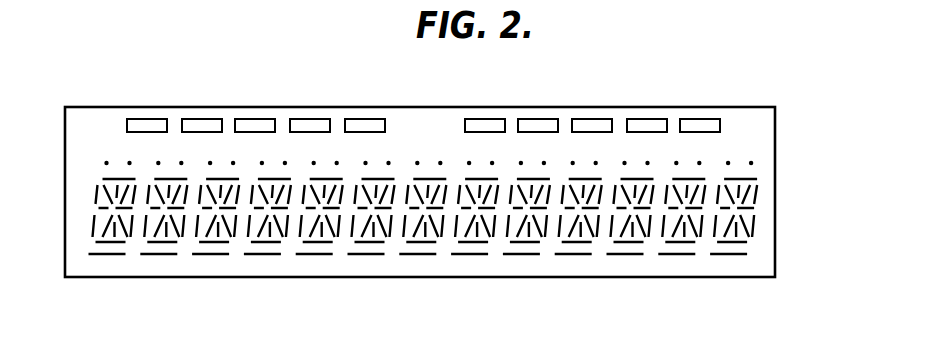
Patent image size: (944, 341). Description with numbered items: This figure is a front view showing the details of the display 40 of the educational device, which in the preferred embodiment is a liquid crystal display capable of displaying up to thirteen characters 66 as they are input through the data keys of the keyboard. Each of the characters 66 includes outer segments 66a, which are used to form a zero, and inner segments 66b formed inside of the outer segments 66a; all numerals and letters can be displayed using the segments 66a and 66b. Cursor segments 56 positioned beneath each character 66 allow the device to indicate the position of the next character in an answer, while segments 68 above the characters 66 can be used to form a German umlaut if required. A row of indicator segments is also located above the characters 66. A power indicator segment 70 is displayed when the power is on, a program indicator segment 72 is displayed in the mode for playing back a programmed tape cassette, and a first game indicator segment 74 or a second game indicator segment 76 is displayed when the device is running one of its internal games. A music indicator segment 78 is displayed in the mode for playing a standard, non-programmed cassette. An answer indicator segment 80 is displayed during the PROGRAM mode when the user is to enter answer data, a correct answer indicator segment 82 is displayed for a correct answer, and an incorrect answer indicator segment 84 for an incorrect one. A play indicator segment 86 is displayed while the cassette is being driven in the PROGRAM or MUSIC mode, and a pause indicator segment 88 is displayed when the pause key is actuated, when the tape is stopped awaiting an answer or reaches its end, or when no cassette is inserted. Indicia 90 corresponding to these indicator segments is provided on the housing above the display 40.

The display 40 is at (66, 148).
The cursor segments 56 is at (101, 255).
The characters 66 is at (96, 198).
The outer segments 66a is at (752, 217).
The inner segments 66b is at (743, 183).
The segments 68 is at (108, 162).
The power indicator segment 70 is at (127, 124).
The program indicator segment 72 is at (193, 133).
The game 1 indicator segment 74 is at (248, 133).
The GAME 2 indicator segment 76 is at (320, 133).
The music indicator segment 78 is at (387, 126).
The answer indicator segment 80 is at (465, 126).
The correct answer indicator segment 82 is at (521, 133).
The incorrect answer indicator segment 84 is at (575, 133).
The play indicator segment 86 is at (628, 128).
The pause indicator segment 88 is at (683, 133).
The indicia 90 is at (770, 87).